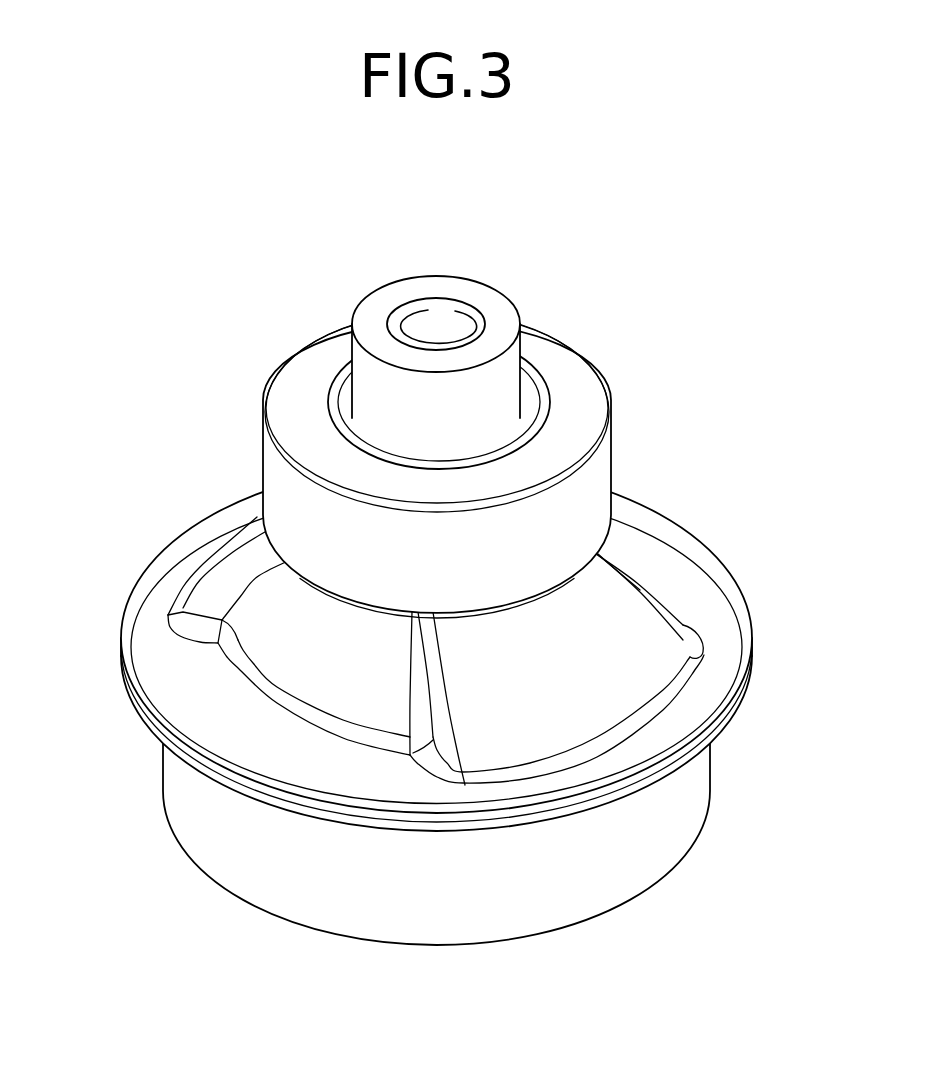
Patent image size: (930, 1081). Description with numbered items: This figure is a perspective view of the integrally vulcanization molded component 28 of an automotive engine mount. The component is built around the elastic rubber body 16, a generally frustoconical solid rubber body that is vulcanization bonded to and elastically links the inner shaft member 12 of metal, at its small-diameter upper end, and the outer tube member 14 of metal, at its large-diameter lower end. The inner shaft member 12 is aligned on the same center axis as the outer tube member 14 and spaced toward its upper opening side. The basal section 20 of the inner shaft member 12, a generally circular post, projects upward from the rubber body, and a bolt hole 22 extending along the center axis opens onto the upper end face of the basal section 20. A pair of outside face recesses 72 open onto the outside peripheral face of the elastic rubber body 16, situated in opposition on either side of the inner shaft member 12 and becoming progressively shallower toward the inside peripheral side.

The inner shaft member 12 is at (392, 329).
The outer tube member 14 is at (231, 838).
The elastic rubber body 16 is at (433, 647).
The basal section 20 is at (498, 388).
The bolt hole 22 is at (437, 319).
The integrally vulcanization molded component 28 is at (433, 591).
The outside face recesses 72 is at (312, 658).